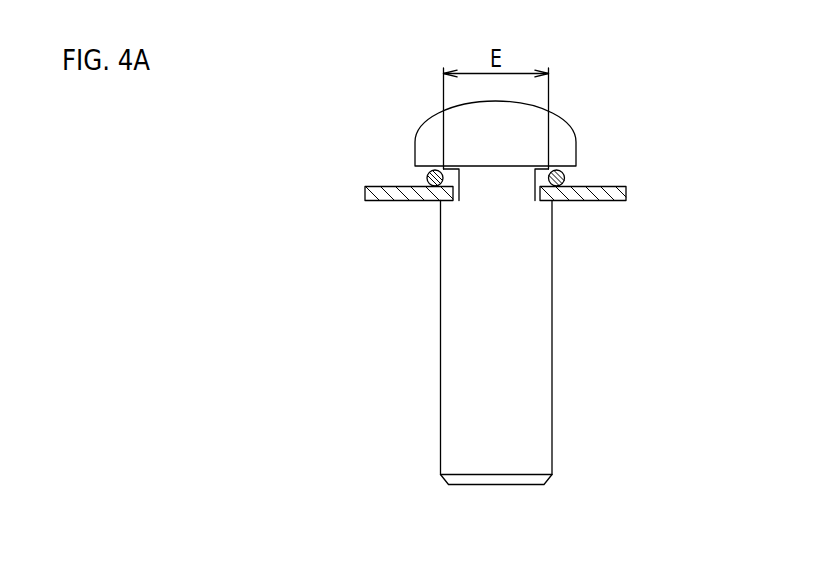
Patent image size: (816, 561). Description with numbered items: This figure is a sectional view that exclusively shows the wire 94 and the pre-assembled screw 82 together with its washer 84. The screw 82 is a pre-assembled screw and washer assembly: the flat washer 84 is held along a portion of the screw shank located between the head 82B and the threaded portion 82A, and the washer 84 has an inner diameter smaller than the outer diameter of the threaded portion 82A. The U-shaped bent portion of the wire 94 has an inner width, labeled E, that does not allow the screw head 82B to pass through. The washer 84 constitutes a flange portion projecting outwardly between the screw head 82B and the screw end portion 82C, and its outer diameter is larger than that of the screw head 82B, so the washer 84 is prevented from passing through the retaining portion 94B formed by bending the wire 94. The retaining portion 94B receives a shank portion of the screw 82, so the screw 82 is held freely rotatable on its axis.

The screw 82 is at (513, 308).
The threaded portion 82A is at (575, 362).
The head 82B is at (578, 124).
The screw end portion 82C is at (514, 488).
The washer 84 is at (618, 202).
The wire 94 is at (427, 177).
The retaining portion 94B is at (573, 179).